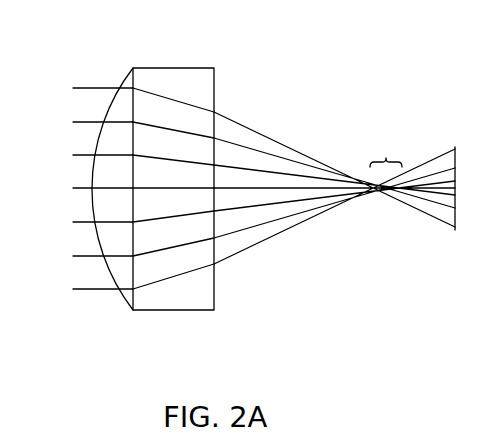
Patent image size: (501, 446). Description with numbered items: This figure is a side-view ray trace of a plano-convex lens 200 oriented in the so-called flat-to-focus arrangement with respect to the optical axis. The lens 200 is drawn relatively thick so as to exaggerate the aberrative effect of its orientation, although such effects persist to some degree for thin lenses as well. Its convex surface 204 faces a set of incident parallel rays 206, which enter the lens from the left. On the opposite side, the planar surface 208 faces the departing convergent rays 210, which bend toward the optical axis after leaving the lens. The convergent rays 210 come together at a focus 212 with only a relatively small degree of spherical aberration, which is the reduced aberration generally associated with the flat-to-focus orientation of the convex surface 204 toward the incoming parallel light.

The plano-convex lens 200 is at (173, 297).
The convex surface 204 is at (128, 78).
The incident parallel rays 206 is at (87, 225).
The planar surface 208 is at (214, 95).
The convergent rays 210 is at (292, 203).
The focus 212 is at (386, 148).